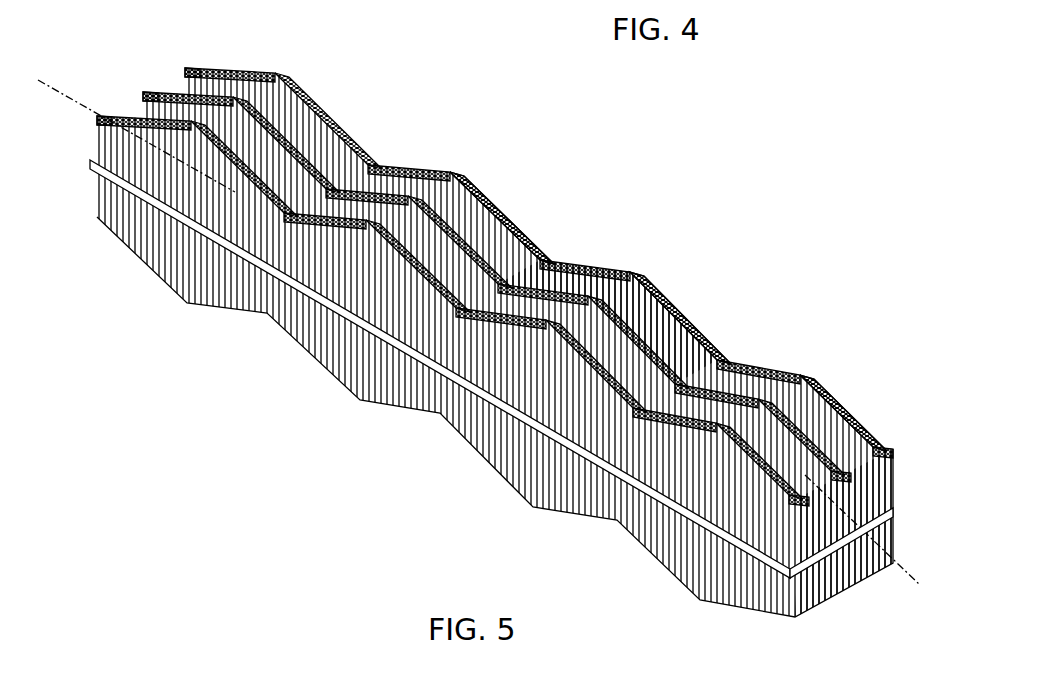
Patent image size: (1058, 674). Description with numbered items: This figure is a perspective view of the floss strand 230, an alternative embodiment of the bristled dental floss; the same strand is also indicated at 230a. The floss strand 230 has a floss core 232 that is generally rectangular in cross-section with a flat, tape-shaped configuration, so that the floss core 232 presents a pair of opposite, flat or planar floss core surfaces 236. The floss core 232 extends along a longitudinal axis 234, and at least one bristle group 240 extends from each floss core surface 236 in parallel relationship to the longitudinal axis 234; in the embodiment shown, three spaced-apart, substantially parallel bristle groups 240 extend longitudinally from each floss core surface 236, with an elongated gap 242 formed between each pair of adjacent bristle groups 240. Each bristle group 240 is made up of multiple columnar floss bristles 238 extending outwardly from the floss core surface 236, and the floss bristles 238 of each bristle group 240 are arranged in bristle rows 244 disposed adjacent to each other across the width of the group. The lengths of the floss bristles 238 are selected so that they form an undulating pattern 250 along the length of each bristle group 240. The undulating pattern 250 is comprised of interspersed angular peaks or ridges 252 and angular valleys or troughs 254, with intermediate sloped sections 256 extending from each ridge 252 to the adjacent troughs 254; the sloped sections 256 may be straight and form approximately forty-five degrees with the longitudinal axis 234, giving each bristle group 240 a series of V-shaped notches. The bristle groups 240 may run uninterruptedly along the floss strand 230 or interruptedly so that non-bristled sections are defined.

The floss strand 230 is at (642, 182).
The fiber bundle assembly 230a is at (662, 216).
The floss core 232 is at (92, 160).
The longitudinal axis 234 is at (895, 562).
The floss core surfaces 236 is at (856, 516).
The floss bristles 238 is at (642, 284).
The bristle group 240 is at (240, 55).
The elongated gap 242 is at (736, 364).
The bristle rows 244 is at (190, 60).
The undulating pattern 250 is at (498, 183).
The undulating pattern ridges 252 is at (276, 74).
The undulating pattern troughs 254 is at (371, 163).
The undulating pattern sloped sections 256 is at (348, 116).